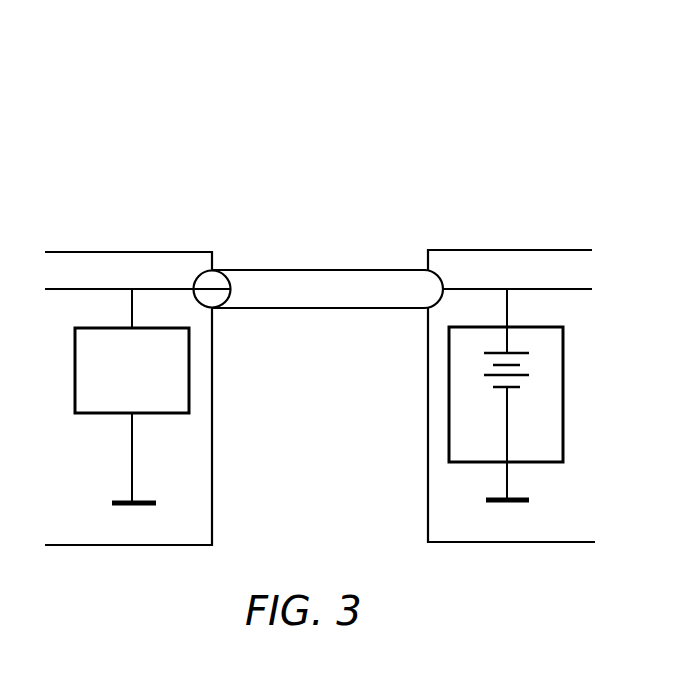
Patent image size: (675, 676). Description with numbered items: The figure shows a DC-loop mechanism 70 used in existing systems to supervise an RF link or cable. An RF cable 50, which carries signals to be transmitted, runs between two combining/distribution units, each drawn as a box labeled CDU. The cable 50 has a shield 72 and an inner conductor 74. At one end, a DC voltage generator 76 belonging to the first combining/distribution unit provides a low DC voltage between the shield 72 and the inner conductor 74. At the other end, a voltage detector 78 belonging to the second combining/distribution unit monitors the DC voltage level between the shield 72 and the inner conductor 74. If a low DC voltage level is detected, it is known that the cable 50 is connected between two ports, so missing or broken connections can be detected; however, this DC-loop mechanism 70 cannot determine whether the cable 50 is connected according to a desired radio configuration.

The DC-loop mechanism 70 is at (362, 134).
The RF cable 50 is at (343, 268).
The shield 72 is at (303, 307).
The inner conductor 74 is at (158, 288).
The DC voltage generator 76 is at (542, 462).
The voltage detector 78 is at (108, 415).